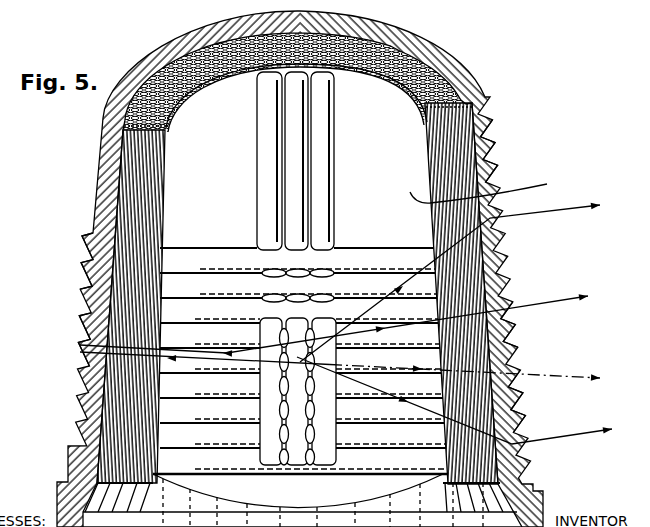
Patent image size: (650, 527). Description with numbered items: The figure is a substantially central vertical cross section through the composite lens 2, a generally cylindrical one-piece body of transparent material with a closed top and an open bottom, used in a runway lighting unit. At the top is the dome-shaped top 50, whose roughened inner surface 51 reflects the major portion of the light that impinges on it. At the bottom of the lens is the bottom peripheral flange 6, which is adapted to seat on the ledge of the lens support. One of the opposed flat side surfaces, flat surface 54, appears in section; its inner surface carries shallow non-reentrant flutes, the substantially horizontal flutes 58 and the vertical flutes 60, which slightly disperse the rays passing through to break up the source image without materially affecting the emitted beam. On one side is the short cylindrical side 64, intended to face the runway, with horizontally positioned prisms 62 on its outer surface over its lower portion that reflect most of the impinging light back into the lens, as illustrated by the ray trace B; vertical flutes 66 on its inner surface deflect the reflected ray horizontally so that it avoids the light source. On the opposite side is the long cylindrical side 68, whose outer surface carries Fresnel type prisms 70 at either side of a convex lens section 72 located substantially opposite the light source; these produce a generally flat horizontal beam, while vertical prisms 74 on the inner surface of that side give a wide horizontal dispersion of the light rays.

The composite lens 2 is at (328, 269).
The dome-shaped top 50 is at (398, 31).
The roughened inner surface 51 is at (412, 62).
The flat surface 54 is at (547, 186).
The shallow flutes 58 is at (384, 282).
The shallow flutes 60 is at (300, 121).
The prisms 62 is at (81, 284).
The short cylindrical side 64 is at (80, 325).
The vertical flutes 66 is at (130, 194).
The long cylindrical side 68 is at (560, 418).
The Fresnel type prisms 70 is at (505, 147).
The convex lens section 72 is at (514, 340).
The vertical prisms 74 is at (442, 154).
The bottom peripheral flange 6 is at (546, 502).
The ray trace B is at (348, 369).